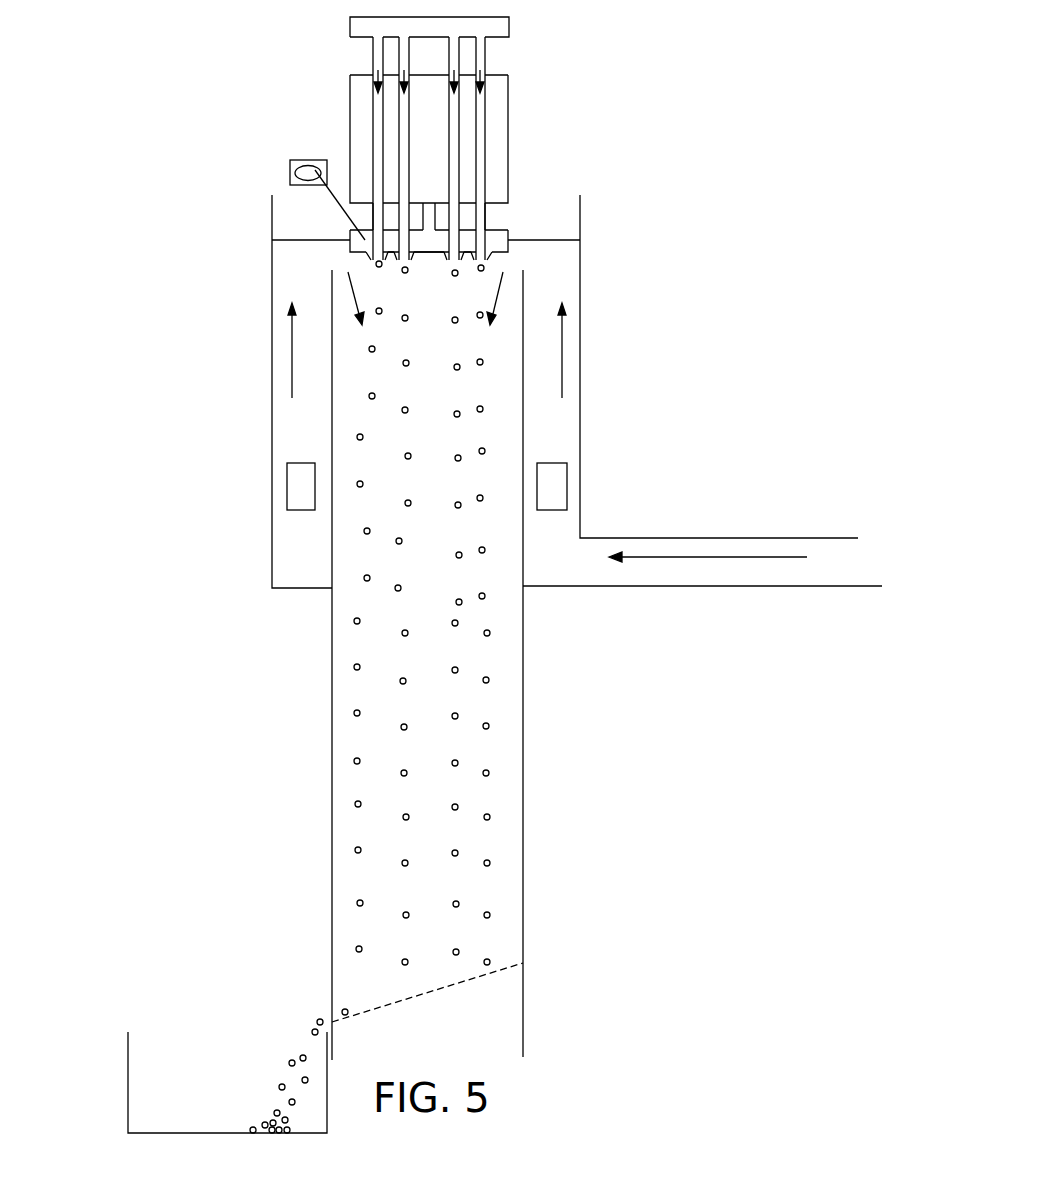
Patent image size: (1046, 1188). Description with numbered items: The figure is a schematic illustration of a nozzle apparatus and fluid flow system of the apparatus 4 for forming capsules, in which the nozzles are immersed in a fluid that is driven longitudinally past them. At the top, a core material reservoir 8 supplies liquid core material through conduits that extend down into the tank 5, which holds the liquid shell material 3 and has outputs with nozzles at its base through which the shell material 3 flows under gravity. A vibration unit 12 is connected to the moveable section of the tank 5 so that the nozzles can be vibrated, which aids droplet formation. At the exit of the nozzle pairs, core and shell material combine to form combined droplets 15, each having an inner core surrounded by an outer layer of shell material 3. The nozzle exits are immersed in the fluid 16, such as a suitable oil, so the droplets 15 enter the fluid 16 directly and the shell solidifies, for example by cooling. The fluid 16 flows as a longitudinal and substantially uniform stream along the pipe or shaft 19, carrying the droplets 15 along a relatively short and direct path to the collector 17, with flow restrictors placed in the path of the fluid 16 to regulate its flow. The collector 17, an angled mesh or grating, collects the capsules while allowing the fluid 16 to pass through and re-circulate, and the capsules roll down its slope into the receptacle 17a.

The apparatus 4 is at (213, 193).
The core material reservoir 8 is at (510, 32).
The tank 5 is at (508, 147).
The liquid shell material 3 is at (423, 170).
The vibration unit 12 is at (300, 158).
The combined droplet 15 is at (483, 362).
The fluid 16 is at (285, 556).
The pipe or shaft 19 is at (332, 843).
The collector 17 is at (365, 1010).
The receptacle 17a is at (128, 1080).